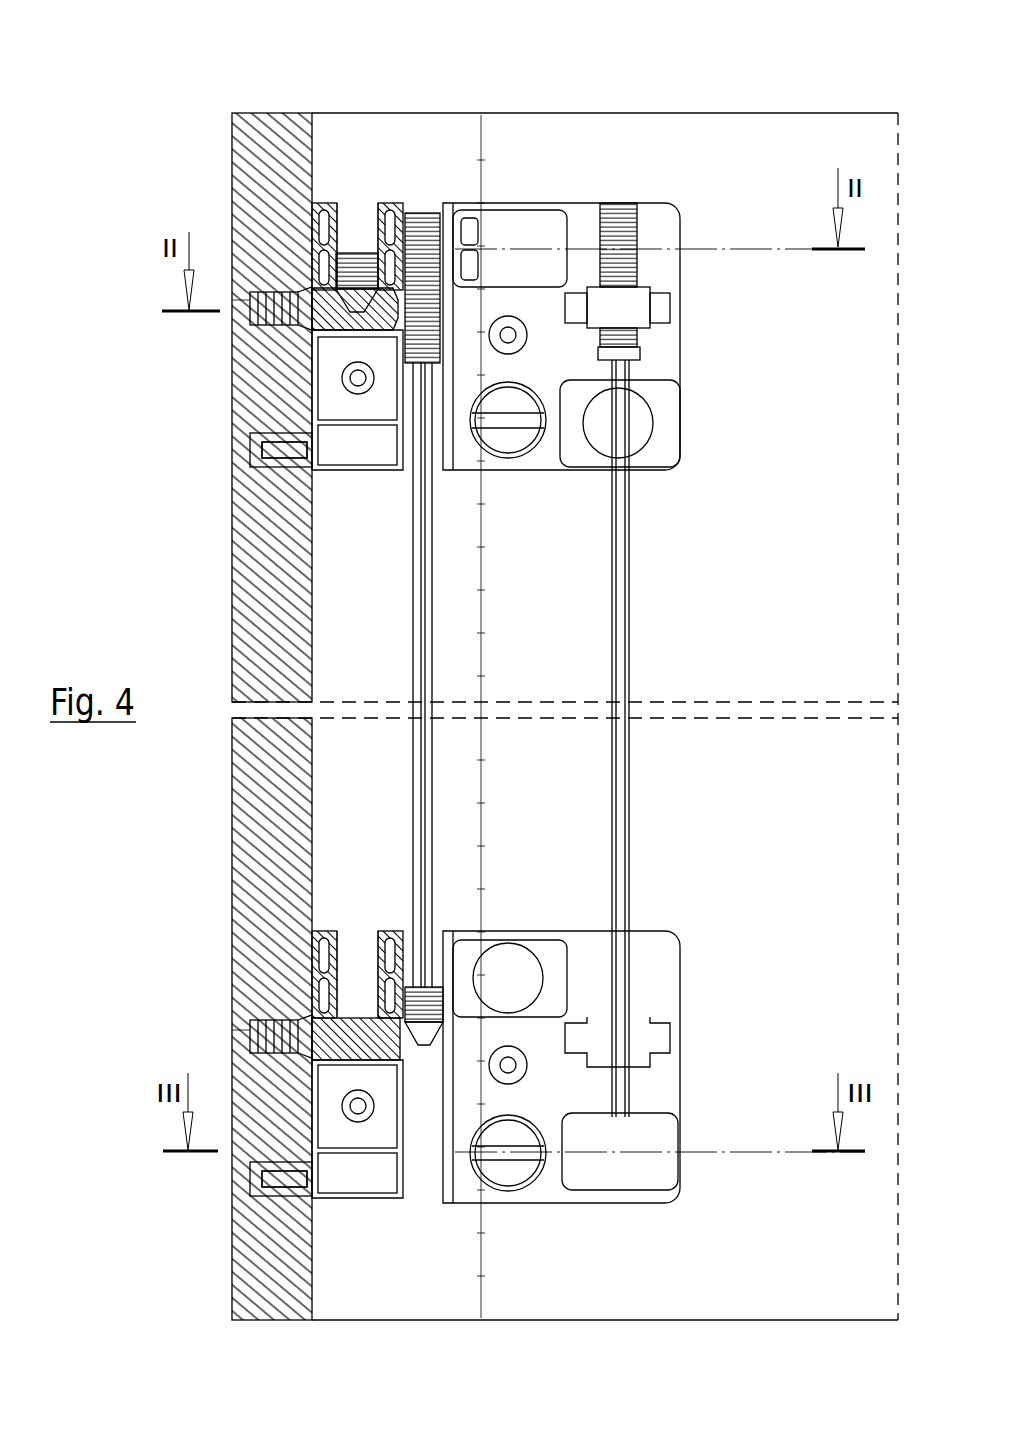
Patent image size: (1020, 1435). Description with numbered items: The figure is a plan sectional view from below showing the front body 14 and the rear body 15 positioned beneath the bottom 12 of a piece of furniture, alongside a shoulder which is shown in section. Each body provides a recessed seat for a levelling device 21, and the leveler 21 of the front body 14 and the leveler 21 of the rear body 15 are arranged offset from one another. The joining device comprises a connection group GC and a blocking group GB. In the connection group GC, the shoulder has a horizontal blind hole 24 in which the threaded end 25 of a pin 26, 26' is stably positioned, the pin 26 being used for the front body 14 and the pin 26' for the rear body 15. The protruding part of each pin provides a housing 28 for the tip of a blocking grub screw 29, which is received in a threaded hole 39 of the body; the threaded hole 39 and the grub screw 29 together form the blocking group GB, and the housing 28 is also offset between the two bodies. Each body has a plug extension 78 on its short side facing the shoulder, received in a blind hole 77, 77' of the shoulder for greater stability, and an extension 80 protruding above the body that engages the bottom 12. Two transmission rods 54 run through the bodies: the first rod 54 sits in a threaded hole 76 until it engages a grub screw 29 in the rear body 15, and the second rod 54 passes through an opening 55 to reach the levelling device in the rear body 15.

The bottom 12 is at (843, 552).
The rear body 15 is at (722, 900).
The front body 14 is at (720, 163).
The levelling device 21 is at (527, 230).
The horizontal blind hole 24 is at (232, 288).
The threaded end 25 is at (250, 308).
The pin 26 is at (314, 251).
The pin 26' is at (295, 980).
The housing 28 is at (343, 330).
The blocking grub screw 29 is at (360, 183).
The threaded hole 39 is at (353, 253).
The transmission rod 54 is at (417, 628).
The opening 55 is at (620, 237).
The threaded hole 76 is at (428, 215).
The blind hole 77 is at (212, 540).
The blind hole 77' is at (220, 1260).
The plug extension 78 is at (283, 467).
The extension 80 is at (513, 447).
The blocking group GB is at (366, 253).
The connection group GC is at (242, 333).